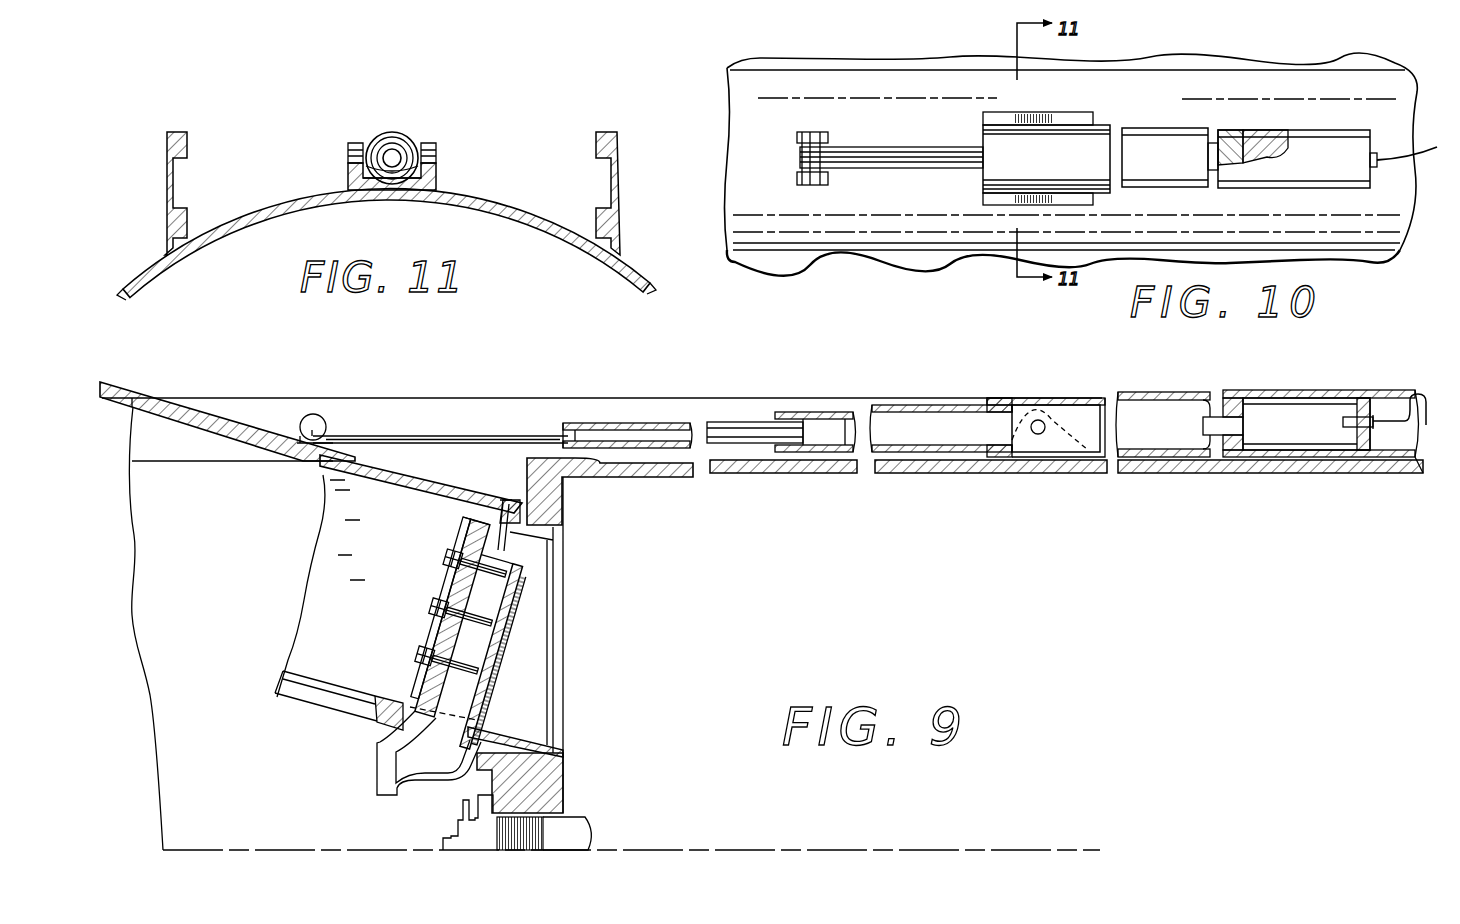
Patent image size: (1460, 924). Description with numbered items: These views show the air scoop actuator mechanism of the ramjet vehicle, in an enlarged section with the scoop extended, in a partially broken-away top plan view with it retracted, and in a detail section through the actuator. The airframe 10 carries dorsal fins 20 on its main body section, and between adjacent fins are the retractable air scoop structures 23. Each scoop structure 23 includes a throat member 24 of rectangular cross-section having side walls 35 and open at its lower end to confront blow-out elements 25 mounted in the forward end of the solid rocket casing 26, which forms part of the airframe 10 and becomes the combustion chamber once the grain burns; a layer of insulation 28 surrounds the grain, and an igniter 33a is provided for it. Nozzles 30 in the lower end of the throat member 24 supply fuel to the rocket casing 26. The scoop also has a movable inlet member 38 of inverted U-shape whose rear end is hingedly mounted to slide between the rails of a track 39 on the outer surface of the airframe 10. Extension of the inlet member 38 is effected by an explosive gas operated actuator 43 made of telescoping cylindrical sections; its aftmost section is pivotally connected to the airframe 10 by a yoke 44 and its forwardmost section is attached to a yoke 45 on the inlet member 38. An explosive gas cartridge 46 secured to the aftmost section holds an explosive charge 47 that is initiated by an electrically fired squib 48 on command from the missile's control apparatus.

In FIG. 11, the airframe 10 is at (297, 193).
In FIG. 10, the airframe 10 is at (1198, 60).
In FIG. 9, the dorsal fins 20 is at (565, 403).
In FIG. 9, the retractable air scoop structures 23 is at (430, 480).
In FIG. 9, the throat member 24 is at (370, 693).
In FIG. 9, the blow-out elements 25 is at (483, 684).
In FIG. 9, the solid rocket casing 26 is at (1415, 465).
In FIG. 11, the layer of insulation 28 is at (567, 240).
In FIG. 9, the layer of insulation 28 is at (963, 473).
In FIG. 9, the nozzles 30 is at (443, 560).
In FIG. 9, the igniter 33a is at (583, 817).
In FIG. 9, the side walls 35 is at (307, 577).
In FIG. 10, the movable inlet member 38 is at (725, 117).
In FIG. 9, the movable inlet member 38 is at (130, 383).
In FIG. 11, the track 39 is at (172, 187).
In FIG. 11, the actuator 43 is at (400, 132).
In FIG. 10, the actuator 43 is at (1300, 128).
In FIG. 9, the actuator 43 is at (1030, 392).
In FIG. 11, the yoke 44 is at (437, 187).
In FIG. 10, the yoke 44 is at (1080, 107).
In FIG. 10, the yoke 45 is at (815, 132).
In FIG. 9, the yoke 45 is at (320, 428).
In FIG. 10, the explosive gas cartridge 46 is at (1357, 130).
In FIG. 9, the explosive gas cartridge 46 is at (1275, 393).
In FIG. 10, the explosive charge 47 is at (1248, 137).
In FIG. 9, the electrically fired squib 48 is at (1343, 422).